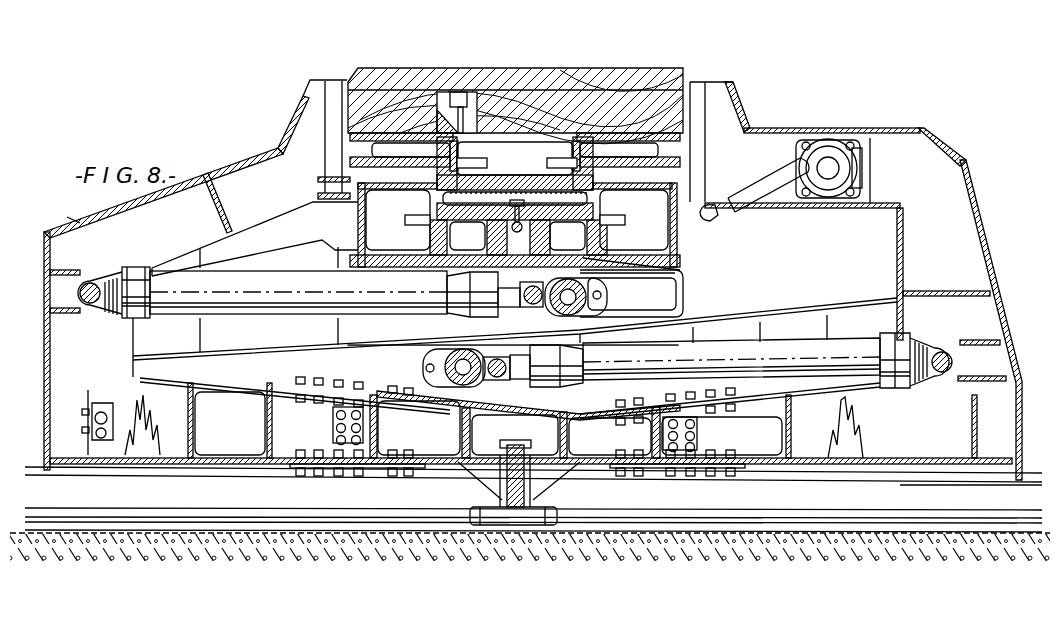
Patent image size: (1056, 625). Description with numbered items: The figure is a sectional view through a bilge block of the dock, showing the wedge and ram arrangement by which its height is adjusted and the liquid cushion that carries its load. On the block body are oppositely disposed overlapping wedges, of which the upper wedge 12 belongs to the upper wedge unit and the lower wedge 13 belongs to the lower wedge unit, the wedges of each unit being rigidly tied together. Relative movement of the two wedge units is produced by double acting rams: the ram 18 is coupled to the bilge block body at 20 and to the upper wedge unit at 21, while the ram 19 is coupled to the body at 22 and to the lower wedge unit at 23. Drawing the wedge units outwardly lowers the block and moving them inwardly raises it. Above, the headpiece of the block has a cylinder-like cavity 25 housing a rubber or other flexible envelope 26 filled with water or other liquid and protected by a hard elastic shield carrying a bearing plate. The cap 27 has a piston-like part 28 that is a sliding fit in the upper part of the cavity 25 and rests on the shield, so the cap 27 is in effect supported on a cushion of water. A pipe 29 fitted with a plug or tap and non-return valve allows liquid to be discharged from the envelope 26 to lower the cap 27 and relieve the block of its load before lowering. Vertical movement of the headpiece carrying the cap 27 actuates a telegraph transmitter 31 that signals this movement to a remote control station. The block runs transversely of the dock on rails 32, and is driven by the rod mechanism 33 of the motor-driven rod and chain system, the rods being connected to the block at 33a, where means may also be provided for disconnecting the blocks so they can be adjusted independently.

The wedge 12 is at (300, 252).
The wedge 13 is at (373, 362).
The double acting ram 18 is at (228, 288).
The double acting ram 19 is at (783, 352).
The coupling 20 is at (90, 282).
The coupling 21 is at (543, 294).
The coupling 22 is at (942, 352).
The coupling 23 is at (498, 380).
The cavity 25 is at (590, 197).
The flexible envelope 26 is at (440, 197).
The cap 27 is at (445, 92).
The piston-like part 28 is at (512, 182).
The pipe 29 is at (519, 229).
The telegraph transmitter 31 is at (830, 168).
The rails 32 is at (993, 477).
The rod mechanism 33 is at (320, 515).
The rod connection 33a is at (517, 530).